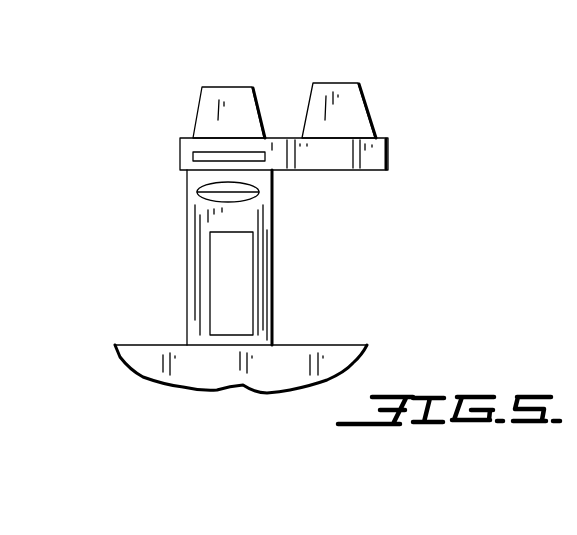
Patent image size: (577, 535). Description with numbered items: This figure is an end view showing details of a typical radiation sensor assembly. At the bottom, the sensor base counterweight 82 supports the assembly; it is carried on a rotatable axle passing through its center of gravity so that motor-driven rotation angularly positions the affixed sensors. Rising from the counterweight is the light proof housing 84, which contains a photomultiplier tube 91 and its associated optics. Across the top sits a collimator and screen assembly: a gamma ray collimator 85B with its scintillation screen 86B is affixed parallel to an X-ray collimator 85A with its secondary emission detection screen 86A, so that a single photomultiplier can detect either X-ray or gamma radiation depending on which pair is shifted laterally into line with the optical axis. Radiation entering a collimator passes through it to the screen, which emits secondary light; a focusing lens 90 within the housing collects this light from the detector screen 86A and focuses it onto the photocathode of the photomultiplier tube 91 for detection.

The sensor base counterweight 82 is at (292, 338).
The light proof housing 84 is at (275, 265).
The X-ray collimator 85A is at (238, 67).
The gamma ray collimator 85B is at (335, 83).
The secondary emission detection screen 86A is at (227, 150).
The scintillation screen 86B is at (330, 170).
The focusing lens 90 is at (205, 200).
The photomultiplier tube 91 is at (210, 280).